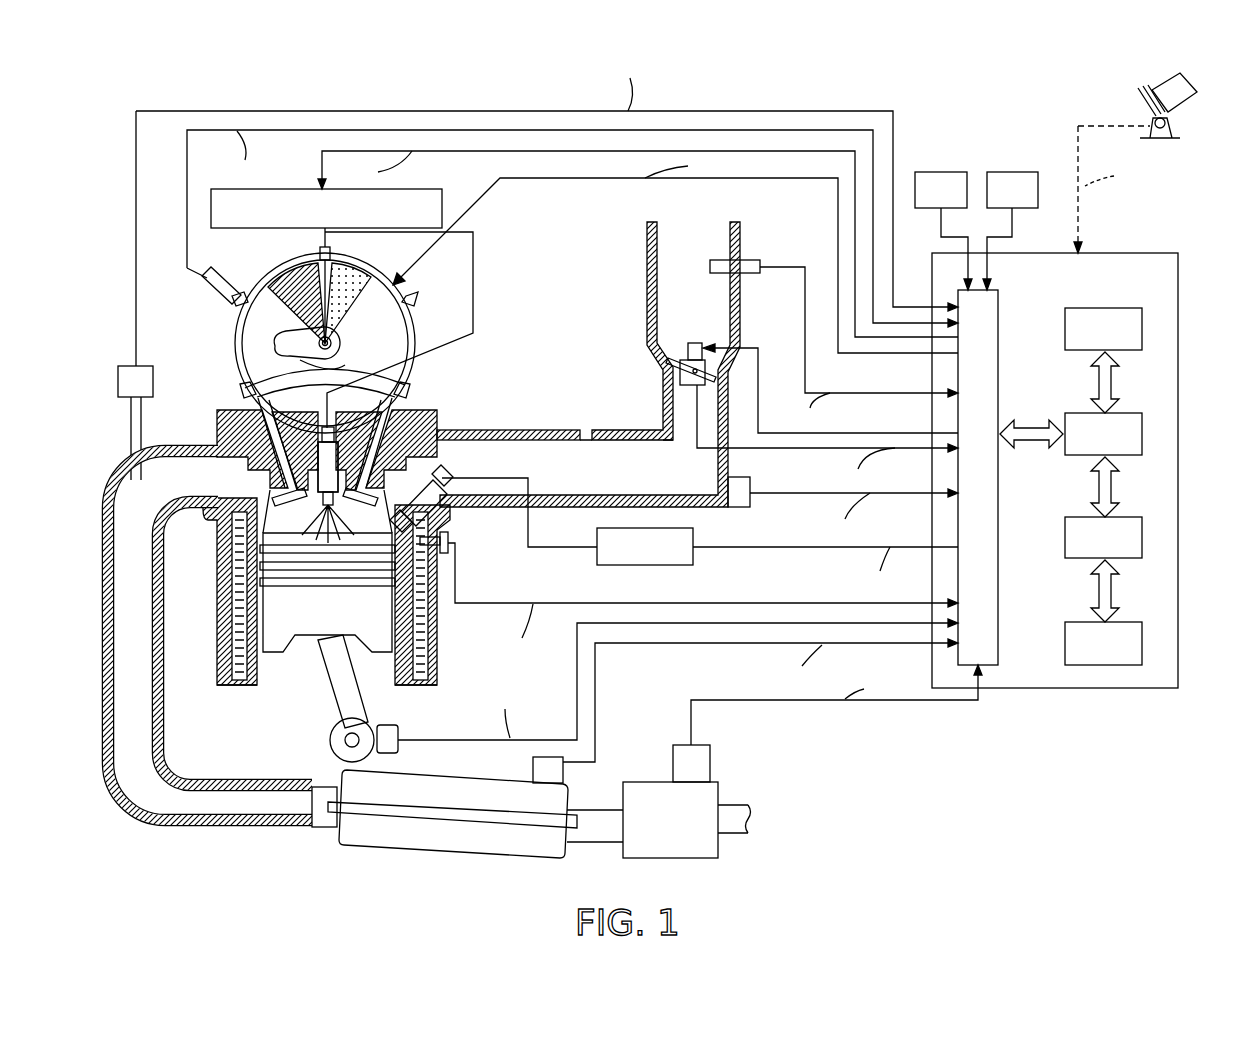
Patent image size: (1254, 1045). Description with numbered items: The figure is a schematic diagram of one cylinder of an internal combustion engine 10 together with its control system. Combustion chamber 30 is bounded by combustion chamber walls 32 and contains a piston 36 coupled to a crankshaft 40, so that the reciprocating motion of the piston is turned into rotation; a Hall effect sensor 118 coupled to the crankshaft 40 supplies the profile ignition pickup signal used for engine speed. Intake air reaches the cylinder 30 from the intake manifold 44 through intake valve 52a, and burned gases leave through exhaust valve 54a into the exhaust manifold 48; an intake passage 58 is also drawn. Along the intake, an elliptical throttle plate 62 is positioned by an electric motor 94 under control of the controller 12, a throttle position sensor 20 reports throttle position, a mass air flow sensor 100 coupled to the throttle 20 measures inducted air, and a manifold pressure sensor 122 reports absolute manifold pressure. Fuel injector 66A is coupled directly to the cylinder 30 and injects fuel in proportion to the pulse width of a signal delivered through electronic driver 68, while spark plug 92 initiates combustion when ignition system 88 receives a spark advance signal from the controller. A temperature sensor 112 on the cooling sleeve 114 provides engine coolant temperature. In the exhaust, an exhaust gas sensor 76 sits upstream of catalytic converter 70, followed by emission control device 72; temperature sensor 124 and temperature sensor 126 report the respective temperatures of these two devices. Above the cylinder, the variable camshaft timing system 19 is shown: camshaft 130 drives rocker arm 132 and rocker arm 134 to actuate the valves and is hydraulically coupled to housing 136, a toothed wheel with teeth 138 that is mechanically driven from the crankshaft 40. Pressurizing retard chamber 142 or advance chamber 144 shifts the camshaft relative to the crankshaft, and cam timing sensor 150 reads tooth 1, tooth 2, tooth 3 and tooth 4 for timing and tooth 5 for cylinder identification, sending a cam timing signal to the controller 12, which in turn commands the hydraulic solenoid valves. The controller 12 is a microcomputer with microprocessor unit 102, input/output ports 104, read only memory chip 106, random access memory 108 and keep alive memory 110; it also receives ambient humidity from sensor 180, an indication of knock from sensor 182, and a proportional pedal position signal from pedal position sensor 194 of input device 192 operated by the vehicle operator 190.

The tooth 1 is at (320, 251).
The tooth 2 is at (414, 306).
The tooth 3 is at (340, 446).
The tooth 4 is at (240, 388).
The tooth 5 is at (236, 308).
The internal combustion engine 10 is at (474, 349).
The controller 12 is at (1118, 253).
The variable camshaft timing system 19 is at (494, 257).
The throttle position sensor 20 is at (668, 362).
The cylinder 30 is at (240, 561).
The combustion chamber walls 32 is at (257, 686).
The piston 36 is at (313, 618).
The crankshaft 40 is at (330, 742).
The intake manifold 44 is at (625, 476).
The exhaust manifold 48 is at (103, 552).
The intake valve 52a is at (380, 496).
The exhaust valve 54a is at (277, 492).
The intake passage 58 is at (665, 421).
The throttle plate 62 is at (686, 360).
The fuel injector 66A is at (442, 484).
The electronic driver 68 is at (693, 539).
The catalytic converter 70 is at (418, 770).
The emission control device 72 is at (648, 782).
The exhaust gas sensor 76 is at (128, 366).
The ignition system 88 is at (445, 190).
The spark plug 92 is at (318, 441).
The electric motor 94 is at (700, 343).
The mass air flow sensor 100 is at (745, 260).
The microprocessor unit 102 is at (1128, 413).
The input/output ports 104 is at (1000, 316).
The read only memory chip 106 is at (1112, 308).
The random access memory 108 is at (1130, 517).
The keep alive memory 110 is at (1130, 622).
The temperature sensor 112 is at (455, 535).
The cooling sleeve 114 is at (426, 636).
The Hall effect sensor 118 is at (400, 733).
The manifold pressure sensor 122 is at (750, 486).
The temperature sensor 124 is at (533, 766).
The temperature sensor 126 is at (712, 766).
The camshaft 130 is at (291, 345).
The rocker arm 132 is at (252, 398).
The rocker arm 134 is at (408, 390).
The housing 136 is at (236, 357).
The teeth 138 is at (416, 292).
The retard chamber 142 is at (362, 280).
The advance chamber 144 is at (283, 283).
The cam timing sensor 150 is at (208, 304).
The humidity sensor 180 is at (943, 231).
The knock sensor 182 is at (1010, 231).
The vehicle operator 190 is at (1185, 92).
The input device 192 is at (1146, 98).
The pedal position sensor 194 is at (1175, 128).